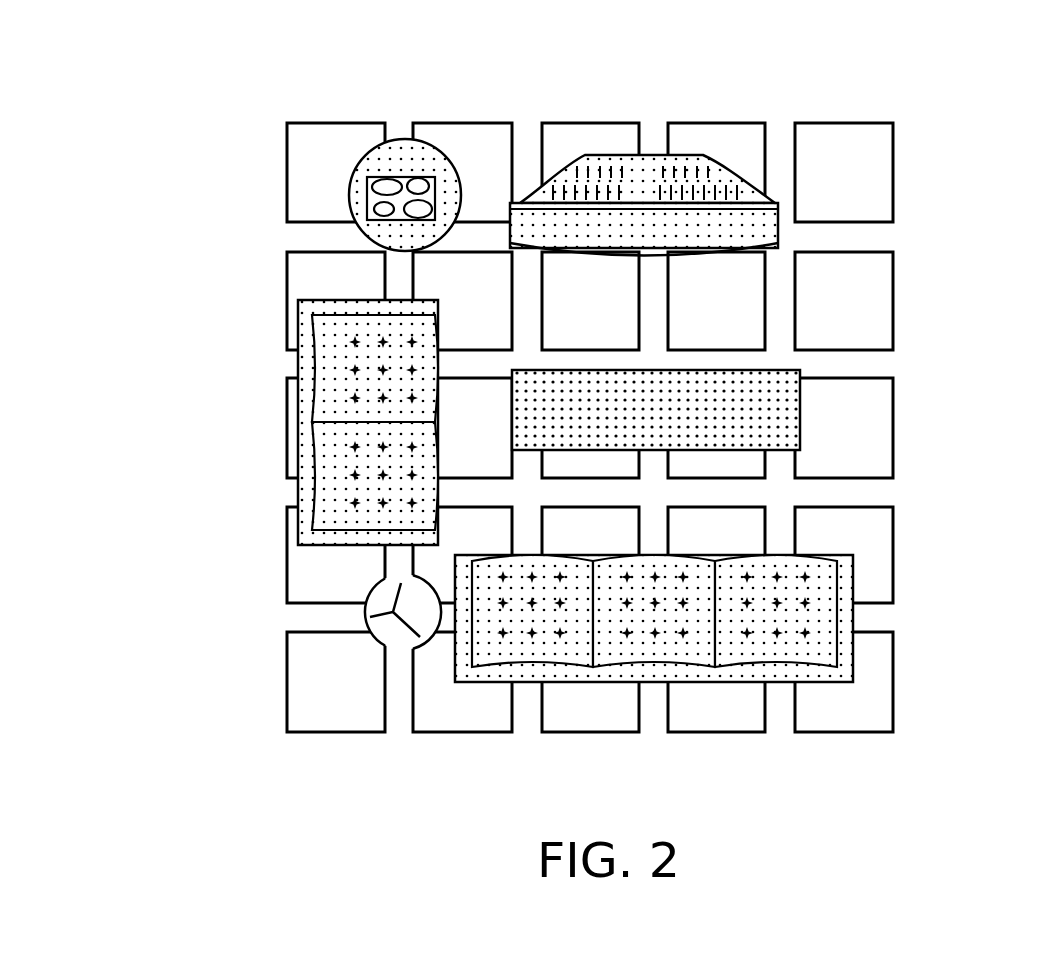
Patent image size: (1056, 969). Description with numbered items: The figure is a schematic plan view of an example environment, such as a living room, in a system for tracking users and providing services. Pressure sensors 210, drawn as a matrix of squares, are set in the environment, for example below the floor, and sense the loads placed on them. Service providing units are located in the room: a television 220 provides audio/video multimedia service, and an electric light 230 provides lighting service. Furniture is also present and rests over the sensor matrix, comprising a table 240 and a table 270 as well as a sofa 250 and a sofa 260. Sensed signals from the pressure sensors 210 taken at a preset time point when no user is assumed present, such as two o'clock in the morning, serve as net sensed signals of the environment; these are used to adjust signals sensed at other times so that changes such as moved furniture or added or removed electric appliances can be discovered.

The pressure sensors 210 is at (325, 168).
The television 220 is at (652, 167).
The electric light 230 is at (370, 617).
The table 240 is at (405, 138).
The sofa 250 is at (317, 365).
The sofa 260 is at (607, 657).
The table 270 is at (800, 412).